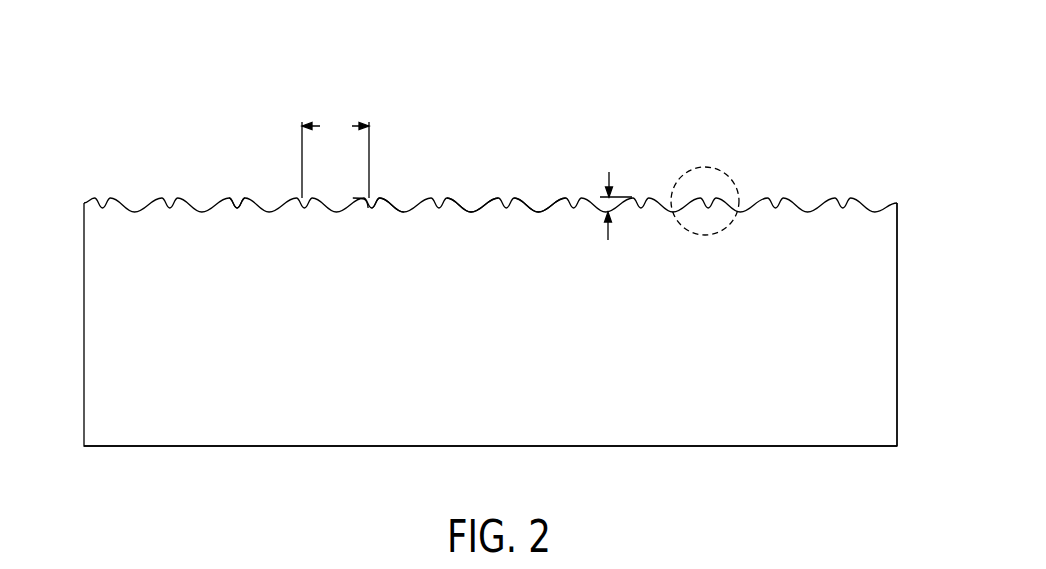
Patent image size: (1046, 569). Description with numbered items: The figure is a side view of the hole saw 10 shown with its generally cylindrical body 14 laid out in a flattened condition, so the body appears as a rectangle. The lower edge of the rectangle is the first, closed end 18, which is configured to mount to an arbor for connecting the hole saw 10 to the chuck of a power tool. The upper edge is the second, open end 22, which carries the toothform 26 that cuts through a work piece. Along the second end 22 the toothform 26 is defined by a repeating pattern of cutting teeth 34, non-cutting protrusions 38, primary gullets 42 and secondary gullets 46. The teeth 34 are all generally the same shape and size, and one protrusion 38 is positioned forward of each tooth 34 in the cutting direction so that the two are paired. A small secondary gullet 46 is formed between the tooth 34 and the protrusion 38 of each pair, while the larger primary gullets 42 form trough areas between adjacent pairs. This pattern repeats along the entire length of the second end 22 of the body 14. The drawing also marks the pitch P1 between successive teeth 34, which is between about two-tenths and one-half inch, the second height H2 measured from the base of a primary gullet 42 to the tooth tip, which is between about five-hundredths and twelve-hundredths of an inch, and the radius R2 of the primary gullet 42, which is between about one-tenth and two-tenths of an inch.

The hole saw 10 is at (500, 231).
The body 14 is at (100, 303).
The first end 18 is at (897, 446).
The second end 22 is at (897, 203).
The toothform 26 is at (142, 188).
The cutting teeth 34 is at (363, 198).
The non-cutting protrusions 38 is at (381, 198).
The primary gullets 42 is at (543, 207).
The secondary gullets 46 is at (238, 203).
The pitch P1 is at (335, 156).
The radius of primary gullet R2 is at (478, 200).
The second height H2 is at (609, 172).